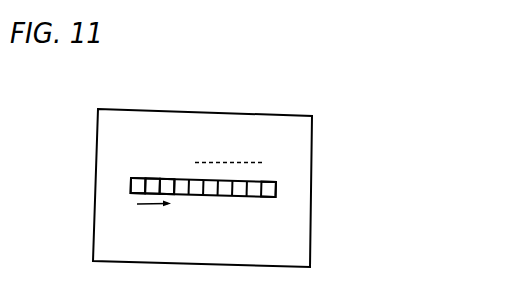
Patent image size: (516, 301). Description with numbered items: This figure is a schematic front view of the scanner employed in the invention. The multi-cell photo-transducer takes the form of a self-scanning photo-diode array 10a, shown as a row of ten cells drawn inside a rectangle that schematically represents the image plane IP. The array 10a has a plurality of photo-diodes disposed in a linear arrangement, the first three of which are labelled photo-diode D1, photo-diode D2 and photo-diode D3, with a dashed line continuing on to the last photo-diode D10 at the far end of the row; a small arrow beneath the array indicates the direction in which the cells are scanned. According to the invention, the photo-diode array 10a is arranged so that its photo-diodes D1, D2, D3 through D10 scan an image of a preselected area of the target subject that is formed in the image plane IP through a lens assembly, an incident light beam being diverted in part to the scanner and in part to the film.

The image plane IP is at (298, 229).
The self-scanning photo-diode array 10a is at (208, 192).
The photo-diode D1 is at (137, 178).
The photo-diode D2 is at (151, 178).
The photo-diode D3 is at (166, 178).
The photo-diode D10 is at (281, 173).